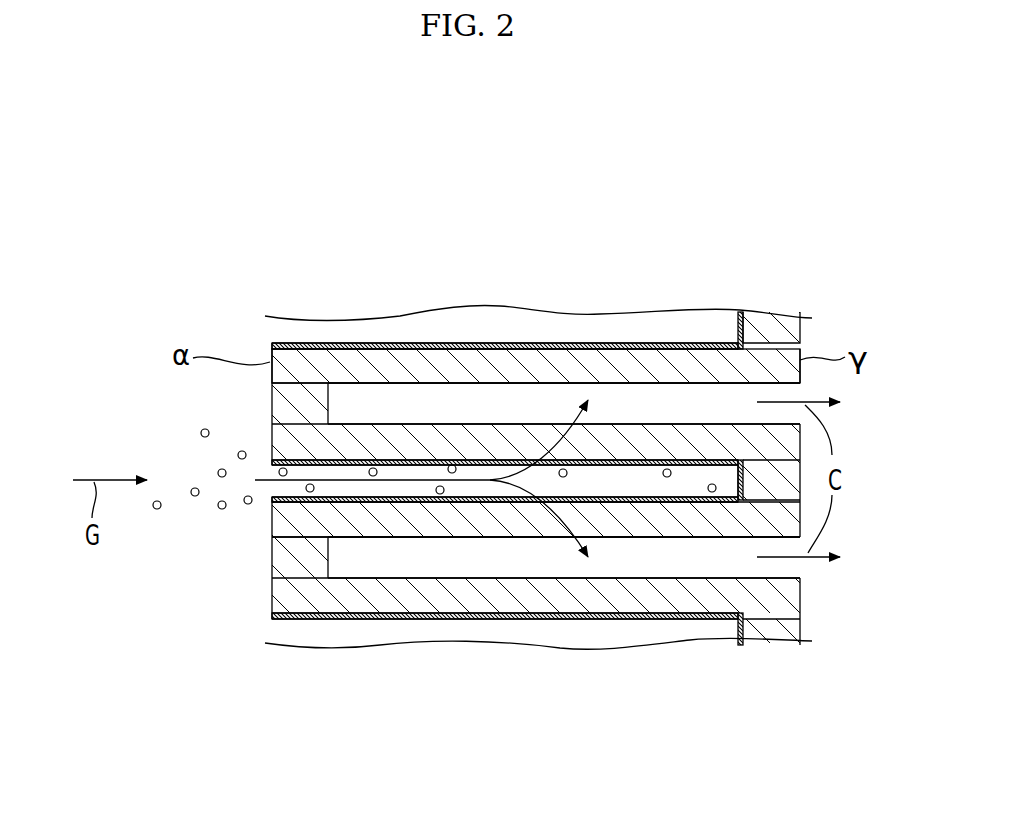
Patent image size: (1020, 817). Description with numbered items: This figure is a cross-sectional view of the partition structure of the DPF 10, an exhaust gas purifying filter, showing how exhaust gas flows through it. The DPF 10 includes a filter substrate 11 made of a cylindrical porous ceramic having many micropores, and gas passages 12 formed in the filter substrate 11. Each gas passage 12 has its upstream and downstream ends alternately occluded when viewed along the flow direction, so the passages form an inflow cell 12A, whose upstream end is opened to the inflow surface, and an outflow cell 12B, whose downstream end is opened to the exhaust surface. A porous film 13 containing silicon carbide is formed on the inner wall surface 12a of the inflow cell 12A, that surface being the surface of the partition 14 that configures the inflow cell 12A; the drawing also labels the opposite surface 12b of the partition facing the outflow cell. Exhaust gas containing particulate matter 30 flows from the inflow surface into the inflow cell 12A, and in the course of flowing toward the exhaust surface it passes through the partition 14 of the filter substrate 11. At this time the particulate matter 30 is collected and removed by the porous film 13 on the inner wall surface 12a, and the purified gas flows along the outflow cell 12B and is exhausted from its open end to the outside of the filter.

The DPF 10 is at (840, 249).
The filter substrate 11 is at (303, 372).
The gas passage 12 is at (422, 472).
The inner wall surface 12a is at (532, 345).
The second surface of single cell 12b is at (738, 388).
The inflow cell 12A is at (620, 490).
The outflow cell 12B is at (557, 400).
The porous film 13 is at (391, 345).
The partition 14 is at (705, 360).
The particulate matter 30 is at (200, 434).